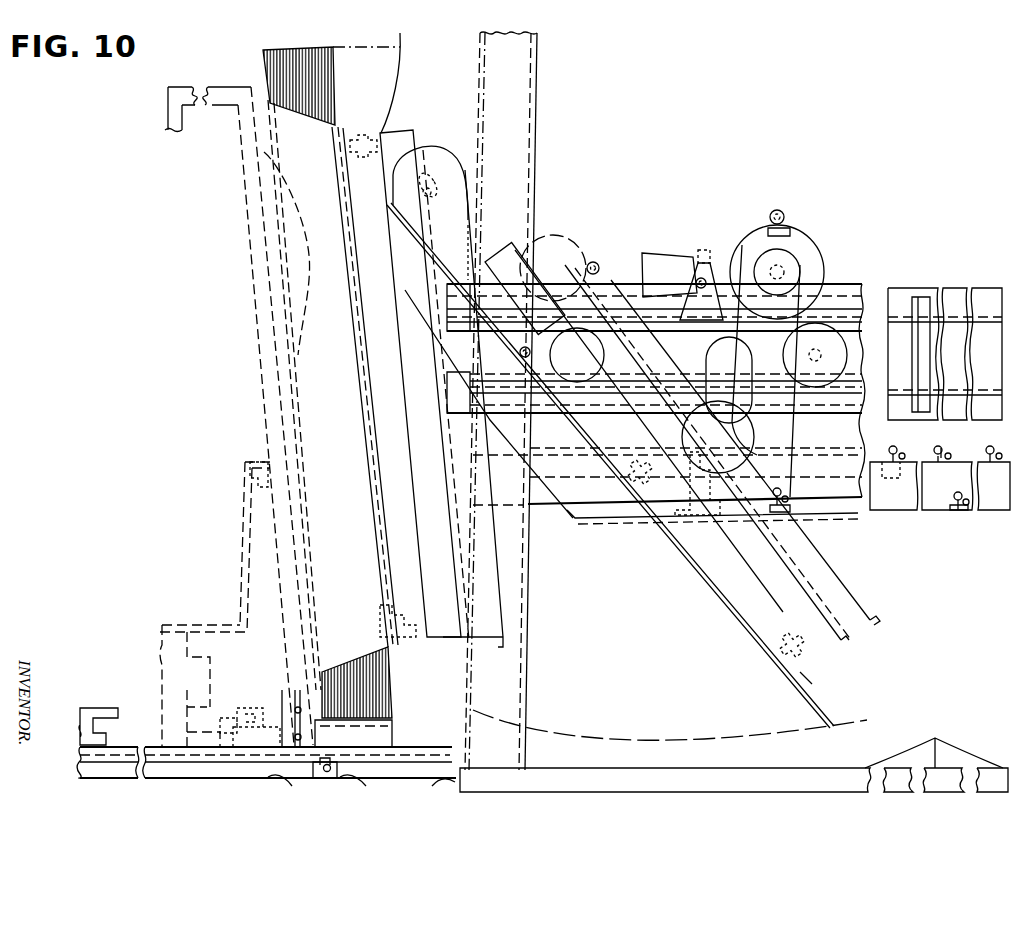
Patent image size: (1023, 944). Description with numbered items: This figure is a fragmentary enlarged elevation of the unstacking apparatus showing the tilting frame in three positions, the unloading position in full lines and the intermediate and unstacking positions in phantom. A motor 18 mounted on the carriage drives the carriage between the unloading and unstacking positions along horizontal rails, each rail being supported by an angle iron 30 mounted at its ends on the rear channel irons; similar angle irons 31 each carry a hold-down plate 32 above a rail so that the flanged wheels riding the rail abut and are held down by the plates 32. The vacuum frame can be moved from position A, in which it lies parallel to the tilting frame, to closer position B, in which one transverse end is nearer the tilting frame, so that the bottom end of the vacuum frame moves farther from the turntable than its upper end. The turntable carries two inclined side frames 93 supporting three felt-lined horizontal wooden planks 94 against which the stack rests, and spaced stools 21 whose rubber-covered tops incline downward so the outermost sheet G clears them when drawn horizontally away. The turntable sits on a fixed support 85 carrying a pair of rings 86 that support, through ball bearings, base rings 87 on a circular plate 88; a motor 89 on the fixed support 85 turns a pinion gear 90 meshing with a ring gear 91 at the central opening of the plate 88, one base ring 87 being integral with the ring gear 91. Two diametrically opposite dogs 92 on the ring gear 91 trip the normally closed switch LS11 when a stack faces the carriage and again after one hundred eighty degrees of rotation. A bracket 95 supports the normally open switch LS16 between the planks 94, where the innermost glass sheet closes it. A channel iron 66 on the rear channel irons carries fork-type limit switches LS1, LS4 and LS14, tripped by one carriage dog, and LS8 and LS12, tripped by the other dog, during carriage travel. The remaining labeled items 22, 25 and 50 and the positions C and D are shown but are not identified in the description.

The motor 18 is at (801, 233).
The stools 21 is at (392, 733).
The mounting bracket 22 is at (378, 606).
The base rail 25 is at (934, 740).
The angle iron 30 is at (606, 404).
The angle irons 31 is at (633, 278).
The hold-down plate 32 is at (470, 332).
The guide lobe 50 is at (580, 255).
The channel iron 66 is at (604, 474).
The fixed support 85 is at (450, 795).
The rings 86 is at (288, 793).
The base rings 87 is at (360, 793).
The circular plate 88 is at (447, 767).
The motor 89 is at (166, 643).
The pinion gear 90 is at (195, 727).
The ring gear 91 is at (247, 742).
The dogs 92 is at (100, 710).
The inclined side frames 93 is at (262, 205).
The horizontal wooden planks 94 is at (298, 253).
The bracket 95 is at (241, 549).
The position A is at (384, 652).
The position B is at (410, 644).
The position C is at (802, 673).
The position D is at (703, 526).
The outermost sheet G is at (599, 524).
The limit switch LS1 is at (884, 480).
The limit switch LS4 is at (993, 468).
The limit switch LS8 is at (780, 514).
The limit switch LS11 is at (236, 718).
The limit switch LS12 is at (958, 512).
The limit switch LS14 is at (946, 460).
The limit switch LS16 is at (251, 480).